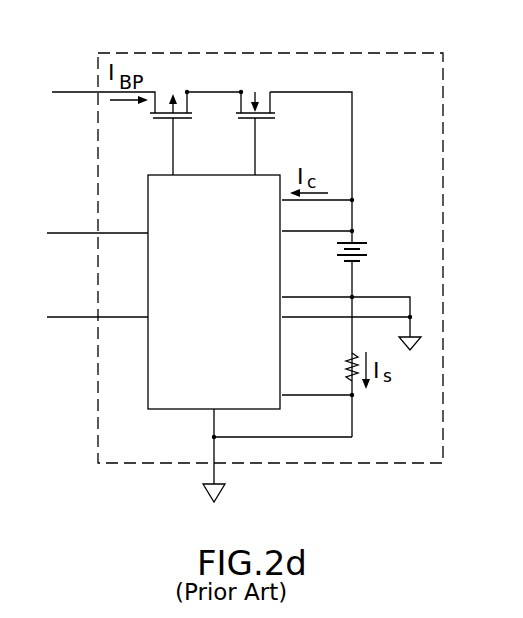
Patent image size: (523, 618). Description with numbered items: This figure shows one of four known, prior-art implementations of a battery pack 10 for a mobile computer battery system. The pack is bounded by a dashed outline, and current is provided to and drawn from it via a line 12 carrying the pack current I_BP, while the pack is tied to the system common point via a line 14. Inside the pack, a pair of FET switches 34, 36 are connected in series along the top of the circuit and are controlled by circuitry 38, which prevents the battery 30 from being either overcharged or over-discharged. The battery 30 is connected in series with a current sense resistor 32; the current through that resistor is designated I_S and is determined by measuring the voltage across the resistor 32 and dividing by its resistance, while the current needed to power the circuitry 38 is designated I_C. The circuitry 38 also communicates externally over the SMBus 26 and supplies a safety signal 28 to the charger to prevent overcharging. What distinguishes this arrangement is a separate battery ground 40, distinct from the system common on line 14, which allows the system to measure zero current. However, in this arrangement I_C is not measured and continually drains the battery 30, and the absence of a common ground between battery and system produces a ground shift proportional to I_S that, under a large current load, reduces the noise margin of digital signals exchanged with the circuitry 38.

The battery pack 10 is at (338, 53).
The line 12 is at (75, 92).
The line 14 is at (212, 471).
The SMBus 26 is at (70, 317).
The safety signal 28 is at (70, 233).
The battery 30 is at (363, 275).
The current sense resistor 32 is at (336, 373).
The FET switch 34 is at (180, 126).
The FET switch 36 is at (270, 127).
The circuitry 38 is at (147, 373).
The battery ground 40 is at (414, 314).